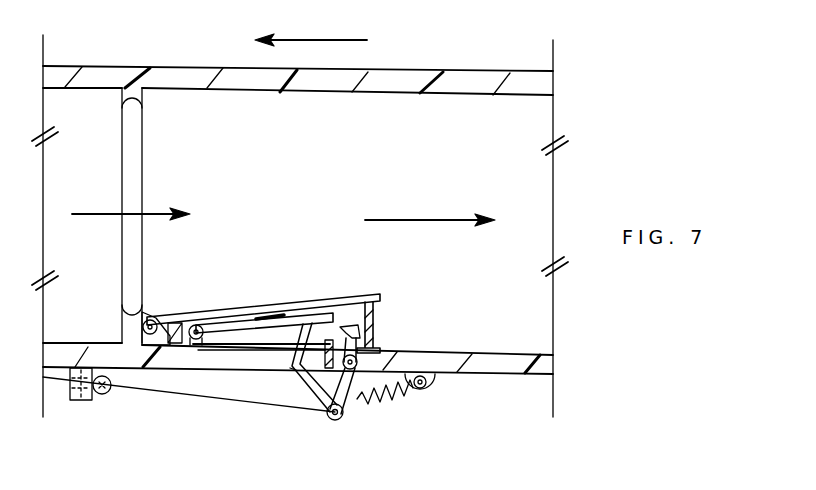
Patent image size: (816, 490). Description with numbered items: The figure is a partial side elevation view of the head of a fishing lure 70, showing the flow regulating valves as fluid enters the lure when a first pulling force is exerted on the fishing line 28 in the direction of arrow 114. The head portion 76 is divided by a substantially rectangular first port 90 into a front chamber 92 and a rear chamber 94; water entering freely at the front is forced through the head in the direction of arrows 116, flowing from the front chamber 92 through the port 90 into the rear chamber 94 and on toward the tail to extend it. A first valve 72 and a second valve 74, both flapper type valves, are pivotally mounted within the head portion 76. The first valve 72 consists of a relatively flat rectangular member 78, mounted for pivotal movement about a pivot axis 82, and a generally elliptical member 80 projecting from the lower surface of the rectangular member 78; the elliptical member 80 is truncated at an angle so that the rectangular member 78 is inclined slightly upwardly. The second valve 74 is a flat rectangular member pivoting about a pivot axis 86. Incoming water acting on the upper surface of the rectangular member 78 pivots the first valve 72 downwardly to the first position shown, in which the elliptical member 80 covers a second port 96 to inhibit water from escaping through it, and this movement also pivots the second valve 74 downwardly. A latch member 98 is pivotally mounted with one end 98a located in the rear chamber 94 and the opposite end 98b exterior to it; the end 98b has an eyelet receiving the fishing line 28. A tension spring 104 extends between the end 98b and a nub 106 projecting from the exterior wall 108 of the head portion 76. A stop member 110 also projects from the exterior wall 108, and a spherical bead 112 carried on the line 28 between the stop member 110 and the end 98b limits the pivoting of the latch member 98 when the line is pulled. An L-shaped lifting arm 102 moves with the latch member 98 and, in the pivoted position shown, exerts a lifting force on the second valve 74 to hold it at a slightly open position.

The fishing lure 70 is at (207, 34).
The head portion 76 is at (423, 78).
The rear chamber 94 is at (470, 110).
The arrow 114 is at (324, 37).
The arrows 116 is at (154, 215).
The front chamber 92 is at (96, 98).
The first port 90 is at (142, 158).
The exterior wall 108 is at (512, 375).
The first valve 72 is at (337, 290).
The second valve 74 is at (235, 318).
The rectangular member 78 is at (282, 310).
The pivot axis 82 is at (153, 315).
The pivot axis 86 is at (200, 348).
The second port 96 is at (240, 359).
The elliptical member 80 is at (372, 308).
The L-shaped lifting arm 102 is at (299, 371).
The latch member 98 is at (345, 391).
The one end of latch member 98a is at (356, 320).
The opposite end of latch member 98b is at (337, 418).
The tension spring 104 is at (390, 396).
The nub 106 is at (427, 388).
The fishing line 28 is at (183, 398).
The stop member 110 is at (80, 402).
The spherical bead 112 is at (103, 390).